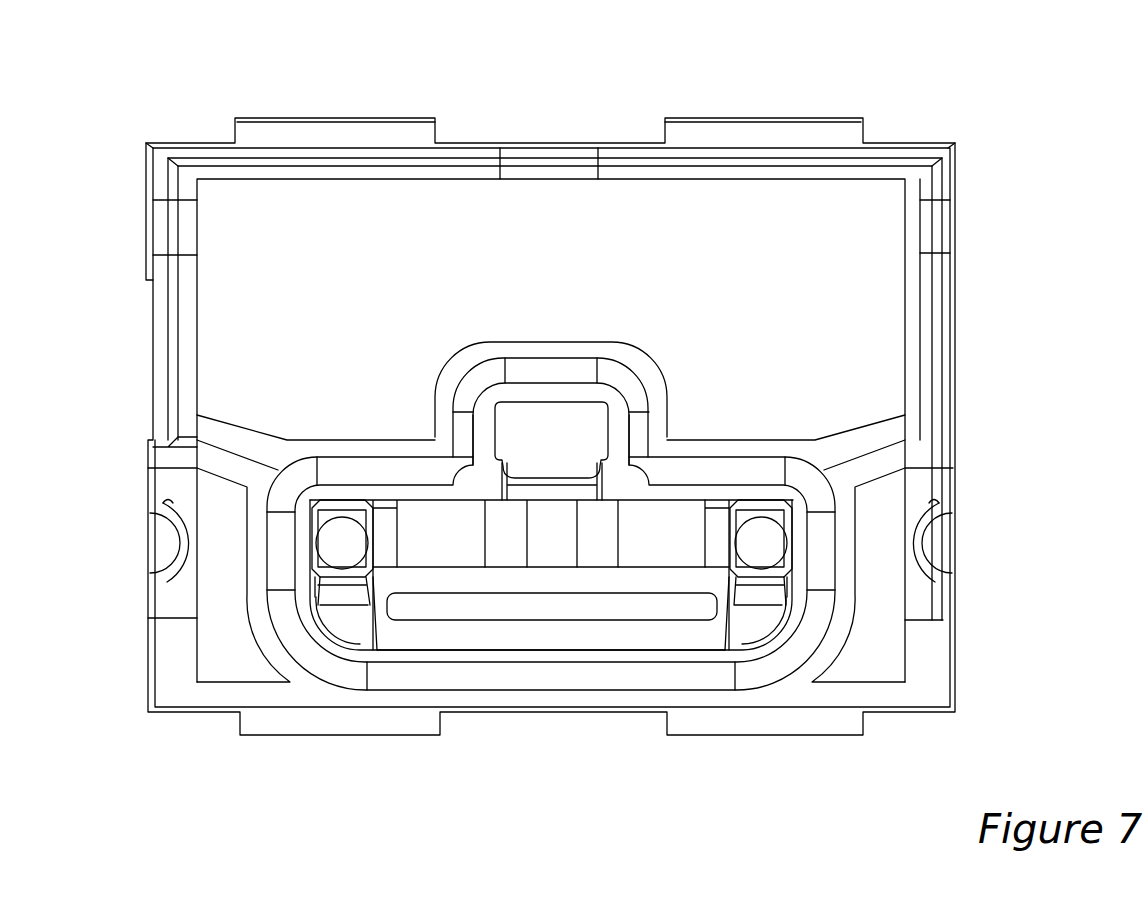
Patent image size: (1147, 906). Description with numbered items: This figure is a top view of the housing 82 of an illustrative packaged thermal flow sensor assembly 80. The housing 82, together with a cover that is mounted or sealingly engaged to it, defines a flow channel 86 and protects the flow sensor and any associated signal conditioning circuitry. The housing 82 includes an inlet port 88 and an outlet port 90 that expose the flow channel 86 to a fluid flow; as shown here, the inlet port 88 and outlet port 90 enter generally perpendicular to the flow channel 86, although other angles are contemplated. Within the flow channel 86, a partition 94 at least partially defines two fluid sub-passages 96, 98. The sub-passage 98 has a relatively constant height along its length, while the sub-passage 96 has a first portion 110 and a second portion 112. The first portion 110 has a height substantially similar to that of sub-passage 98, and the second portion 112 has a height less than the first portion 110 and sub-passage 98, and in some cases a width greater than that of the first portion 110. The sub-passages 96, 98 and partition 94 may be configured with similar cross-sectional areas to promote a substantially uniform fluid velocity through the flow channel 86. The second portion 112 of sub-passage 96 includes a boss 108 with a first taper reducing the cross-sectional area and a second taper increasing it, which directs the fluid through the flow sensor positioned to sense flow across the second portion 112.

The flow sensor assembly 80 is at (997, 120).
The housing 82 is at (792, 693).
The flow channel 86 is at (510, 608).
The inlet port 88 is at (343, 546).
The outlet port 90 is at (768, 537).
The partition 94 is at (643, 607).
The sub-passage 96 is at (690, 553).
The sub-passage 98 is at (562, 647).
The boss 108 is at (550, 525).
The first portion 110 is at (428, 578).
The second portion 112 is at (428, 510).